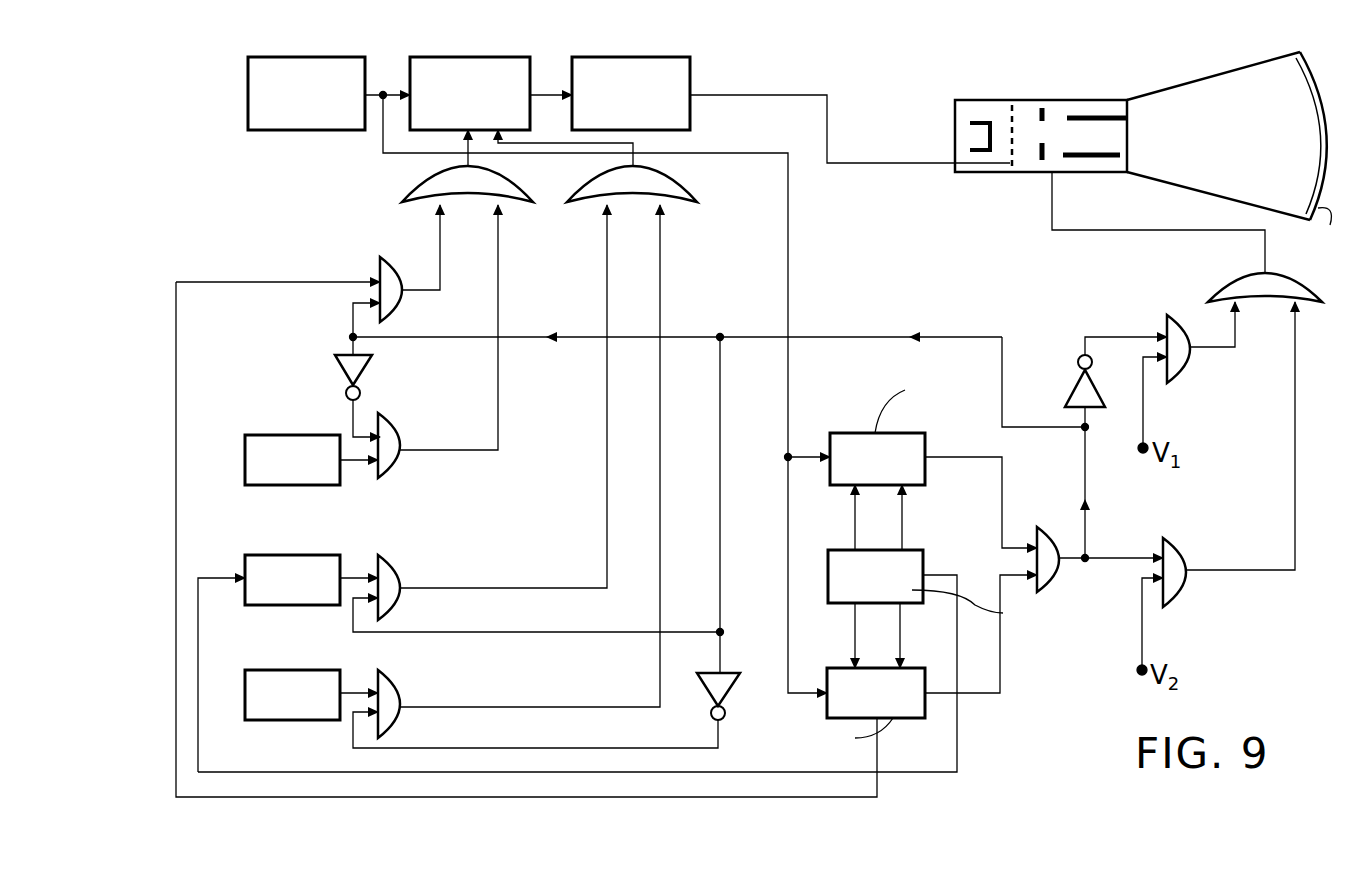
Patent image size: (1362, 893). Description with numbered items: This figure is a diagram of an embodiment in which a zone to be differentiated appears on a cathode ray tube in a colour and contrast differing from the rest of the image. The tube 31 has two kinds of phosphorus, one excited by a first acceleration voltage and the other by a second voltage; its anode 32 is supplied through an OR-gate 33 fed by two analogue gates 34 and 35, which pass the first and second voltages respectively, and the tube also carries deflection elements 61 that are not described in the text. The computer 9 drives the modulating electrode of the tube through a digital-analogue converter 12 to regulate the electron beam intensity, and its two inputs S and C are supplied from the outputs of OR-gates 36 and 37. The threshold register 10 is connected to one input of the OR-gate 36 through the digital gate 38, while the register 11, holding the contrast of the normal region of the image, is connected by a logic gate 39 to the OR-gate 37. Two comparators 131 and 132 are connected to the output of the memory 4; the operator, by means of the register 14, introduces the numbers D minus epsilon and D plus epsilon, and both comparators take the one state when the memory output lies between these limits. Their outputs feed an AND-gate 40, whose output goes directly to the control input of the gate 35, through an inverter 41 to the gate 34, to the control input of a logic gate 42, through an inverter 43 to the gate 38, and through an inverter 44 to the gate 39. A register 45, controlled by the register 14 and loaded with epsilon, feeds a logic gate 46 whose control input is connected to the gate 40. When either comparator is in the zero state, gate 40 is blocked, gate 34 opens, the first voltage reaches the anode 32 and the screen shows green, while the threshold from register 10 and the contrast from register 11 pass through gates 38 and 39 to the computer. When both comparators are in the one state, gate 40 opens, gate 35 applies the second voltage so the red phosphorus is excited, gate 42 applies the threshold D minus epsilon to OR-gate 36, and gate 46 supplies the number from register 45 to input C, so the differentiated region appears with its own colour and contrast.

The memory 4 is at (248, 78).
The computer 9 is at (410, 76).
The digital-analogue converter 12 is at (572, 76).
The threshold register 10 is at (290, 435).
The register 11 is at (288, 670).
The register 45 is at (290, 555).
The register 14 is at (845, 550).
The comparator 131 is at (858, 433).
The comparator 132 is at (843, 668).
The OR-gate 36 is at (420, 178).
The OR-gate 37 is at (622, 184).
The OR-gate 33 is at (1250, 272).
The analogue gate 34 is at (1190, 370).
The analogue gate 35 is at (1188, 558).
The digital gate 38 is at (398, 472).
The logic gate 39 is at (398, 695).
The AND-gate 40 is at (1055, 535).
The logic gate 42 is at (400, 278).
The logic gate 46 is at (398, 580).
The inverter 41 is at (1065, 395).
The inverter 43 is at (372, 368).
The inverter 44 is at (700, 690).
The cathode ray tube 31 is at (1255, 65).
The anode 32 is at (1044, 114).
The deflection plates 61 is at (1122, 155).